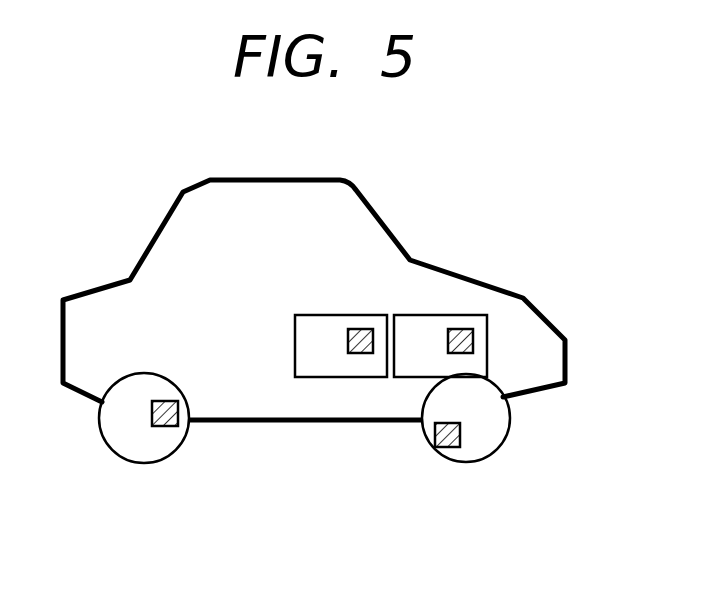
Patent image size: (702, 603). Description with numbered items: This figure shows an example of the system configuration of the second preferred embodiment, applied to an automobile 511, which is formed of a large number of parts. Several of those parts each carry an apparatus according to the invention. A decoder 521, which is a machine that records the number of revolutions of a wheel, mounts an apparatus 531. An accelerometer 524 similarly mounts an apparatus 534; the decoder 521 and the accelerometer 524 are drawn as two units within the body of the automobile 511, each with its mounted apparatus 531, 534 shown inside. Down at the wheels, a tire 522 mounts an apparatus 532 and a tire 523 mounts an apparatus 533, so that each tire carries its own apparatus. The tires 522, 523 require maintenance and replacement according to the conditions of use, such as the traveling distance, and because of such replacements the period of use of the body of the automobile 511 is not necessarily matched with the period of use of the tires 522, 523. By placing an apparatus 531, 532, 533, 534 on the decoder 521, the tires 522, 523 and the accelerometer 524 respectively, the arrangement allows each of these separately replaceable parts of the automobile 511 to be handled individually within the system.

The automobile 511 is at (233, 177).
The decoder 521 is at (435, 315).
The accelerometer 524 is at (322, 315).
The apparatus 531 is at (462, 329).
The apparatus 534 is at (365, 329).
The tire 522 is at (505, 447).
The apparatus 533 is at (183, 447).
The apparatus 532 is at (458, 448).
The tire 523 is at (165, 426).